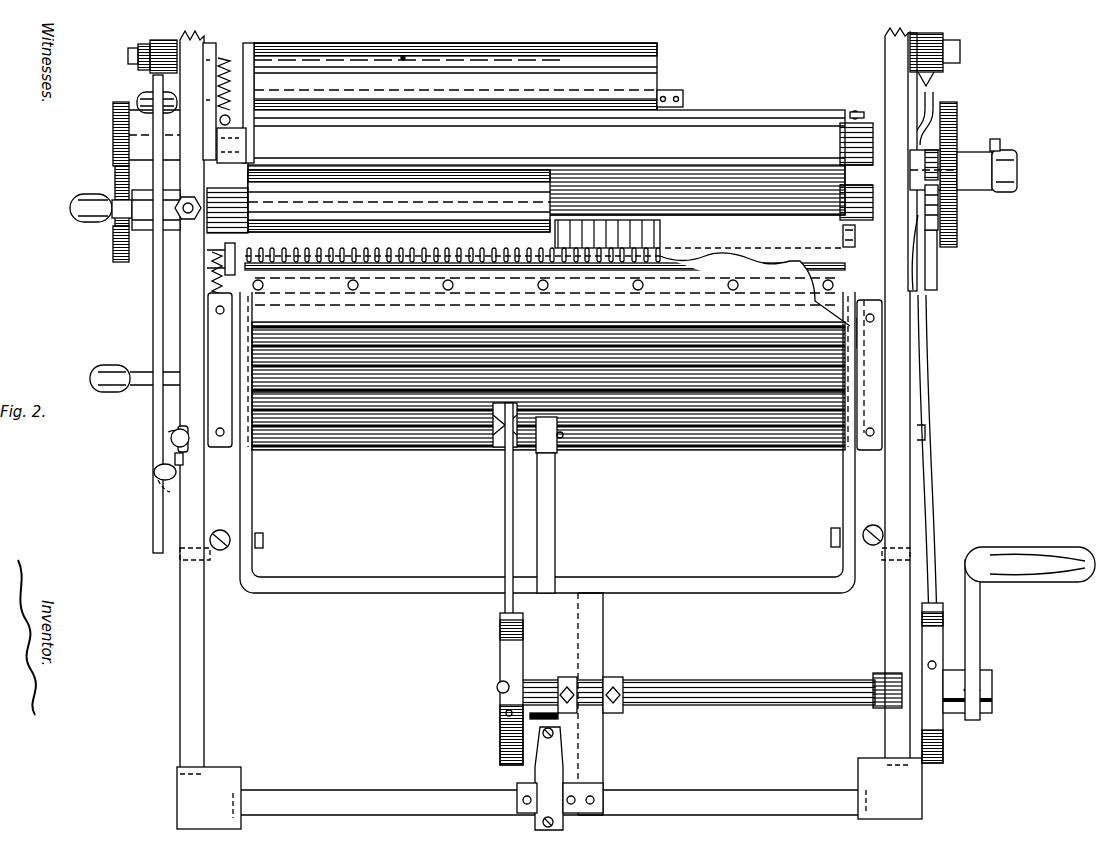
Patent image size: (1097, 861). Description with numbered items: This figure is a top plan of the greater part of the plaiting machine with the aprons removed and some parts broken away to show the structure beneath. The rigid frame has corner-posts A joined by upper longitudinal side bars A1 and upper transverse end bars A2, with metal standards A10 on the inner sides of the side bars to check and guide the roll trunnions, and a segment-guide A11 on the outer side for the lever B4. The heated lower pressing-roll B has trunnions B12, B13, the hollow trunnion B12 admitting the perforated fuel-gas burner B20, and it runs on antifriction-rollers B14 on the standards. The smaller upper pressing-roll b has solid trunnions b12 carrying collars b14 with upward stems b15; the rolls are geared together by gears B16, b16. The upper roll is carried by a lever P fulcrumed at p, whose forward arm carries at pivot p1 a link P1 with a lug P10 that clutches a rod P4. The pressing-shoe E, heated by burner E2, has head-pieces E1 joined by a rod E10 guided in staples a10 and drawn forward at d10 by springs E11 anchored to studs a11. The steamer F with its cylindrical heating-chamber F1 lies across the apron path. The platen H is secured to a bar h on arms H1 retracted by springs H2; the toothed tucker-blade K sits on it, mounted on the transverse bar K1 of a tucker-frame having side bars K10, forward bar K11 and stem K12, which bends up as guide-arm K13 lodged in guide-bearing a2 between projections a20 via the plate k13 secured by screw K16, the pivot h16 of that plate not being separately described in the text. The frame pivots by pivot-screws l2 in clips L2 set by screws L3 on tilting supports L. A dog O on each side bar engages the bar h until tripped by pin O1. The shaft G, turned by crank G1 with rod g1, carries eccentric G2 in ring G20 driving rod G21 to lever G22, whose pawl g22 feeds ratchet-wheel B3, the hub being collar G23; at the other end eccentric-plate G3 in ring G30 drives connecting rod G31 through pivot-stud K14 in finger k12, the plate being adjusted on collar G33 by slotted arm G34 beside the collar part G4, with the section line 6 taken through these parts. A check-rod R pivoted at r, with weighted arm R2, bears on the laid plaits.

The corner-post A is at (180, 806).
The upper longitudinal side bar A1 is at (190, 666).
The upper transverse end bar A2 is at (315, 800).
The standard A10 is at (205, 137).
The segment-guide A11 is at (937, 258).
The staple a10 is at (135, 46).
The stud a11 is at (231, 120).
The guide-bearing a2 is at (603, 810).
The guide projection a20 is at (568, 784).
The lower pressing-roll B is at (748, 112).
The upper pressing-roll b is at (478, 187).
The ratchet-wheel B3 is at (975, 146).
The lever B4 is at (1020, 171).
The trunnion B12 is at (177, 160).
The trunnion b12 is at (229, 187).
The trunnion B13 is at (935, 142).
The antifriction-roller B14 is at (857, 140).
The collar b14 is at (187, 233).
The stem b15 is at (115, 236).
The gear B16 is at (118, 141).
The gear b16 is at (112, 186).
The fuel-gas burner B20 is at (110, 218).
The spring connection point d10 is at (360, 72).
The pressing-shoe E is at (658, 47).
The head-piece E1 is at (322, 80).
The fuel-gas burner E2 is at (683, 97).
The rod E10 is at (403, 59).
The spring E11 is at (233, 52).
The steamer F is at (688, 455).
The cylindrical chamber F1 is at (728, 405).
The shaft G is at (748, 688).
The crank G1 is at (1042, 550).
The crank rod g1 is at (984, 613).
The eccentric G2 is at (943, 667).
The eccentric-plate G3 is at (500, 688).
The collar G4 is at (560, 723).
The ring G20 is at (932, 762).
The rod G21 is at (936, 474).
The lever G22 is at (940, 192).
The pawl g22 is at (945, 208).
The collar G23 is at (993, 706).
The ring G30 is at (510, 667).
The connecting rod G31 is at (505, 526).
The collar G33 is at (570, 677).
The arm G34 is at (507, 748).
The platen H is at (755, 276).
The arm H1 is at (212, 291).
The spring H2 is at (214, 300).
The bar h is at (812, 332).
The pivot h16 is at (568, 822).
The tucker-blade K is at (661, 232).
The transverse bar K1 is at (605, 305).
The side bar K10 is at (255, 464).
The forward transverse bar K11 is at (366, 590).
The stem K12 is at (553, 540).
The guide-arm K13 is at (553, 643).
The pivot-stud K14 is at (487, 449).
The screw K16 is at (530, 821).
The finger k12 is at (550, 455).
The plate k13 is at (565, 772).
The tilting support L is at (216, 580).
The clip L2 is at (232, 530).
The adjustable screw L3 is at (211, 539).
The pivot-screw l2 is at (260, 538).
The dog O is at (235, 342).
The trip-pin O1 is at (255, 267).
The lever P is at (155, 527).
The fulcrum p is at (950, 45).
The link P1 is at (160, 460).
The pivot p1 is at (160, 480).
The rod P4 is at (176, 436).
The lug P10 is at (172, 444).
The check-rod R is at (573, 255).
The weighted arm R2 is at (215, 266).
The pivot r is at (130, 64).
The section line 6 is at (592, 617).